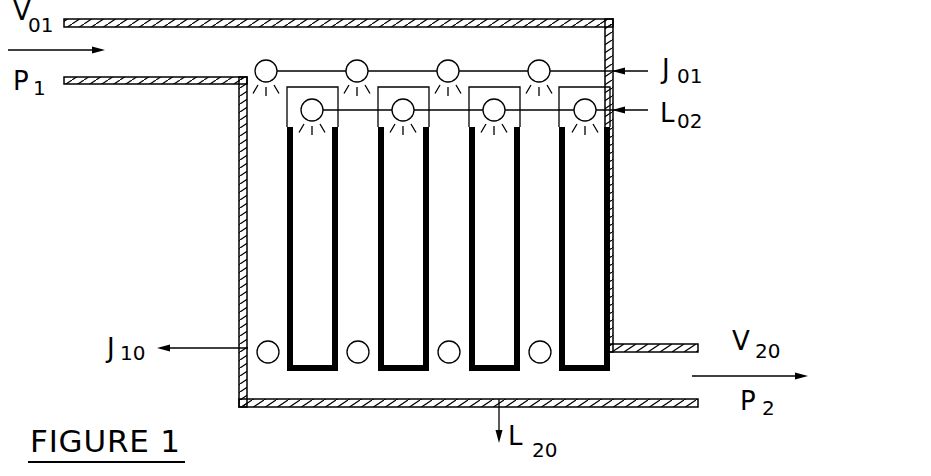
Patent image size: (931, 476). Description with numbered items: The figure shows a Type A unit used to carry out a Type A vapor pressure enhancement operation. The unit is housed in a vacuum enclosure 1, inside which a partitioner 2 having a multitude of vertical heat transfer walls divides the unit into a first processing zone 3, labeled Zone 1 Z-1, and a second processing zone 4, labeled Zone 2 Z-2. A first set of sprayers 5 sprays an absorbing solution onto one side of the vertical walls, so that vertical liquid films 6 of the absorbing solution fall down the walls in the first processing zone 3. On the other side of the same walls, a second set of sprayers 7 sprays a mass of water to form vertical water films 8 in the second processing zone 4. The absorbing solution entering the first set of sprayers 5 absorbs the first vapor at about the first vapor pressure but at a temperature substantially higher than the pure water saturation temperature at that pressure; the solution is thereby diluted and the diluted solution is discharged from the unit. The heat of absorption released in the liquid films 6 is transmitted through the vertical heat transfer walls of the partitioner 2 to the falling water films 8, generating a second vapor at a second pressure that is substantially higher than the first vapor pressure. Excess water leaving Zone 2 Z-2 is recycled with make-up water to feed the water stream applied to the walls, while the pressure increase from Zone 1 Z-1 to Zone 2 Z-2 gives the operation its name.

The vacuum enclosure 1 is at (233, 153).
The partitioner 2 is at (275, 373).
The first processing zone 3 is at (497, 58).
The second processing zone 4 is at (475, 380).
The first set of sprayers 5 is at (345, 63).
The vertical liquid films of absorbing solution 6 is at (252, 193).
The second set of sprayers 7 is at (320, 115).
The vertical water films 8 is at (297, 193).
The Zone 1 Z-1 is at (431, 58).
The Zone 2 Z-2 is at (405, 382).